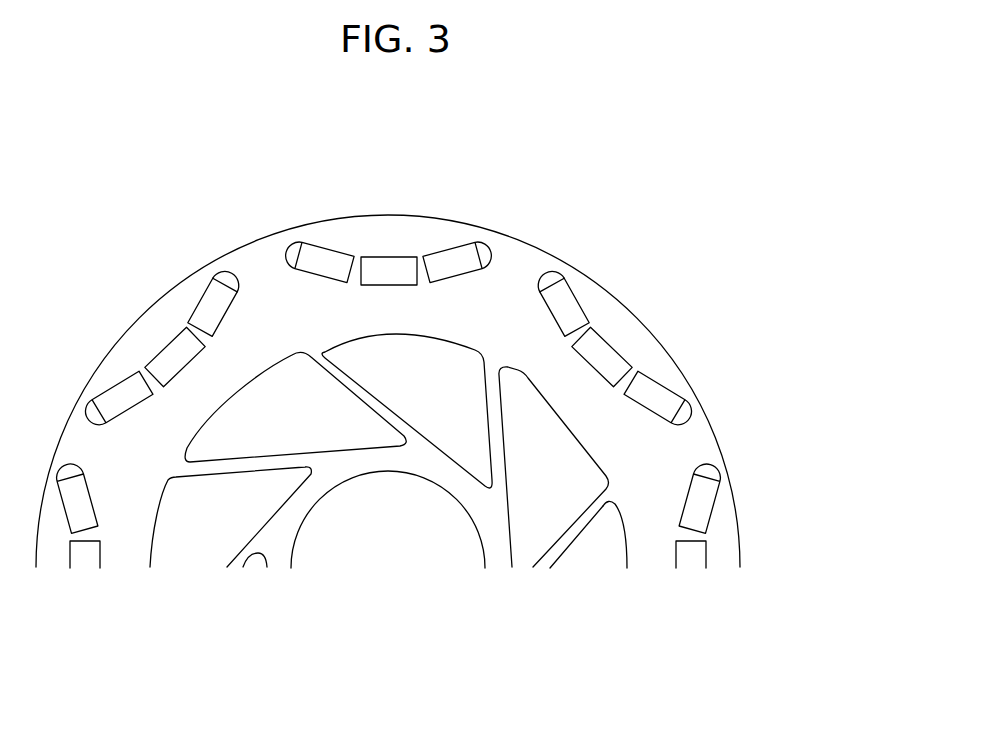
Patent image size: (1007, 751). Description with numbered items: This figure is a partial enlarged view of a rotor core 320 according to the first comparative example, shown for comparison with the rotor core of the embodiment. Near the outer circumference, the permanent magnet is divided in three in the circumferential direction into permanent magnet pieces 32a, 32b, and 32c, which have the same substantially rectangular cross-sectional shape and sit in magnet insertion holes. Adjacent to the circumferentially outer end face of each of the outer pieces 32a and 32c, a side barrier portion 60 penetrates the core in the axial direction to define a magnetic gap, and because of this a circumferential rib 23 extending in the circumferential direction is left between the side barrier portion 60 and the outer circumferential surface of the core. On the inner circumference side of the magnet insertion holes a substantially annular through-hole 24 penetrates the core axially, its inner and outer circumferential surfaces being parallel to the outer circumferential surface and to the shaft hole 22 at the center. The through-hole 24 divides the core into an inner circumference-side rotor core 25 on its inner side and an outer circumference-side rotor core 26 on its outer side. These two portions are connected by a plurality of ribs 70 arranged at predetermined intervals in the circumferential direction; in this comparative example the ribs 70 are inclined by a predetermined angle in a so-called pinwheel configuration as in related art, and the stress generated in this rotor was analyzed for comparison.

The rotor core 320 is at (617, 122).
The shaft hole 22 is at (387, 474).
The circumferential rib 23 is at (214, 270).
The through-hole 24 is at (203, 530).
The inner circumference-side rotor core 25 is at (504, 548).
The outer circumference-side rotor core 26 is at (652, 535).
The permanent magnet piece 32a is at (325, 262).
The permanent magnet piece 32b is at (389, 270).
The permanent magnet piece 32c is at (457, 262).
The side barrier portion 60 is at (240, 283).
The rib 70 is at (500, 440).